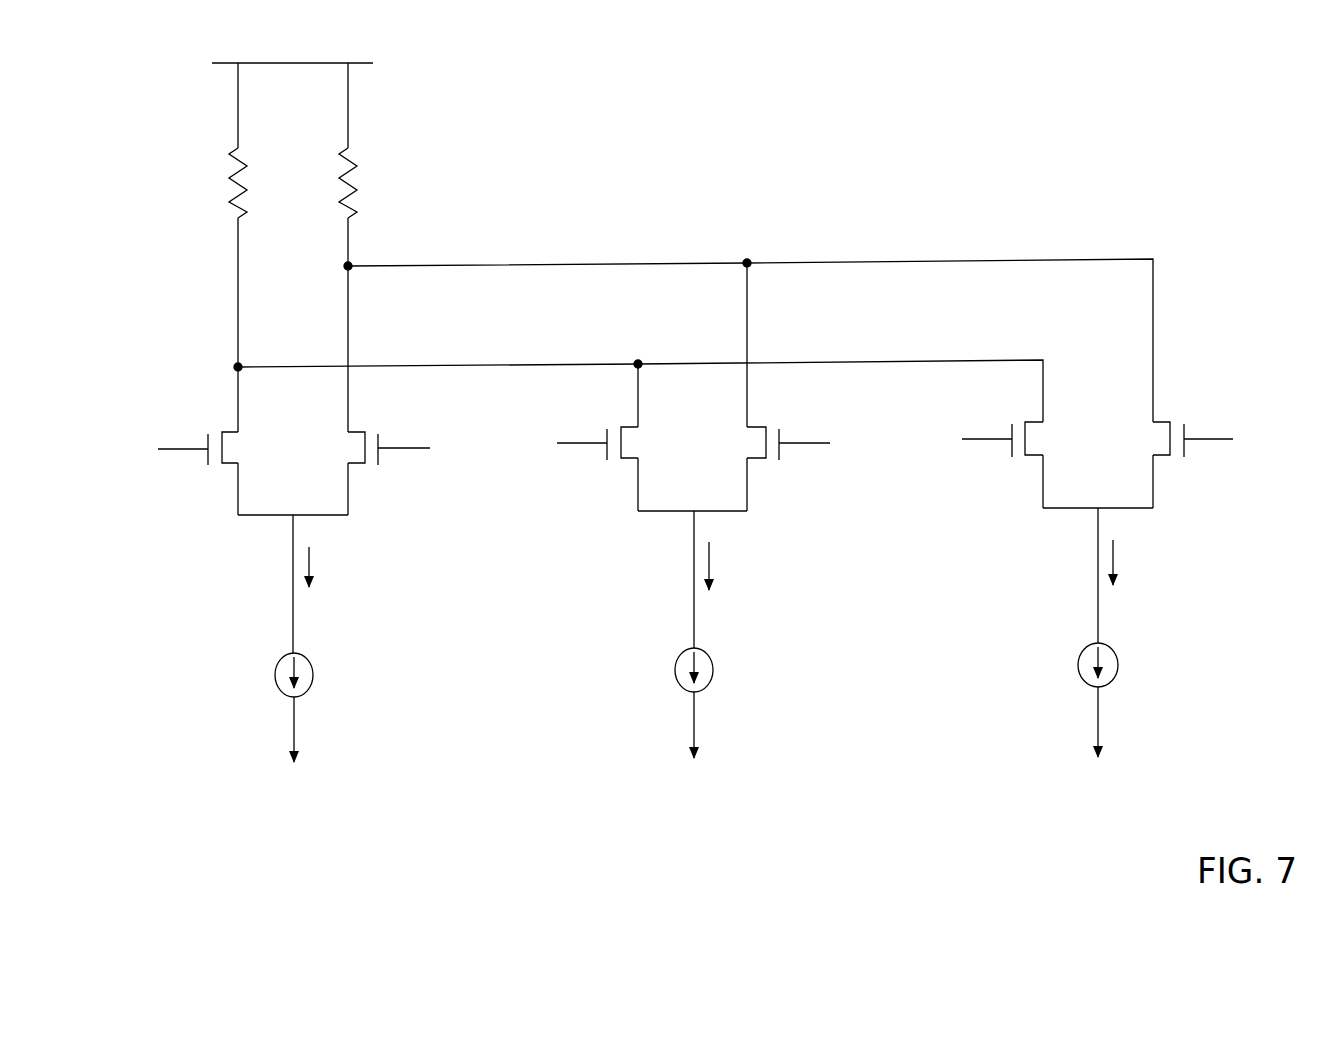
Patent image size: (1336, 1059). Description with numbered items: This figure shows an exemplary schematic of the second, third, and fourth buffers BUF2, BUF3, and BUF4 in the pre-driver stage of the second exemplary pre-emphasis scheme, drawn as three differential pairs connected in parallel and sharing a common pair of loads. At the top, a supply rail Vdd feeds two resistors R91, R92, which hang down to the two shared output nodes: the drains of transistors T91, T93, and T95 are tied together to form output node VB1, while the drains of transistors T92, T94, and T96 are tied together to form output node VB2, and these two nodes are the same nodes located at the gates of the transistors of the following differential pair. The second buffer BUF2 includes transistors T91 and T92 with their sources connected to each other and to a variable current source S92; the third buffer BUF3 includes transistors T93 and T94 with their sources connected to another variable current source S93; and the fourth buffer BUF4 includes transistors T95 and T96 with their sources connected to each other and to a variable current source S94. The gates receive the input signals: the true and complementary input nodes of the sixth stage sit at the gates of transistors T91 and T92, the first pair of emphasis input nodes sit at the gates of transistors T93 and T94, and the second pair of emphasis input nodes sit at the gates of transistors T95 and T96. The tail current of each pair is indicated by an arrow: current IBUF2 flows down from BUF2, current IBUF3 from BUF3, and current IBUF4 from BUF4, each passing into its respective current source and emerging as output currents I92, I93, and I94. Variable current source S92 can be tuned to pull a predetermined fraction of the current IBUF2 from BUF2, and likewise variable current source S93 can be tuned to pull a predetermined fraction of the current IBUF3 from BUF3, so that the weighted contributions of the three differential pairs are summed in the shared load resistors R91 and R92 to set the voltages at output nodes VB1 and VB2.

The supply voltage rail Vdd is at (310, 53).
The resistor R91 is at (219, 183).
The resistor R92 is at (367, 183).
The output node VB1 is at (731, 334).
The output node VB2 is at (622, 385).
The second buffer BUF2 is at (293, 531).
The third buffer BUF3 is at (720, 526).
The fourth buffer BUF4 is at (1109, 523).
The transistor T91 is at (216, 472).
The transistor T92 is at (373, 472).
The transistor T93 is at (616, 467).
The transistor T94 is at (773, 467).
The transistor T95 is at (1021, 464).
The transistor T96 is at (1177, 464).
The variable current source S92 is at (304, 707).
The variable current source S93 is at (705, 703).
The variable current source S94 is at (1108, 700).
The current IBUF2 is at (332, 567).
The current IBUF3 is at (733, 566).
The current IBUF4 is at (1137, 562).
The current I92 is at (296, 790).
The current I93 is at (696, 786).
The current I94 is at (1100, 783).